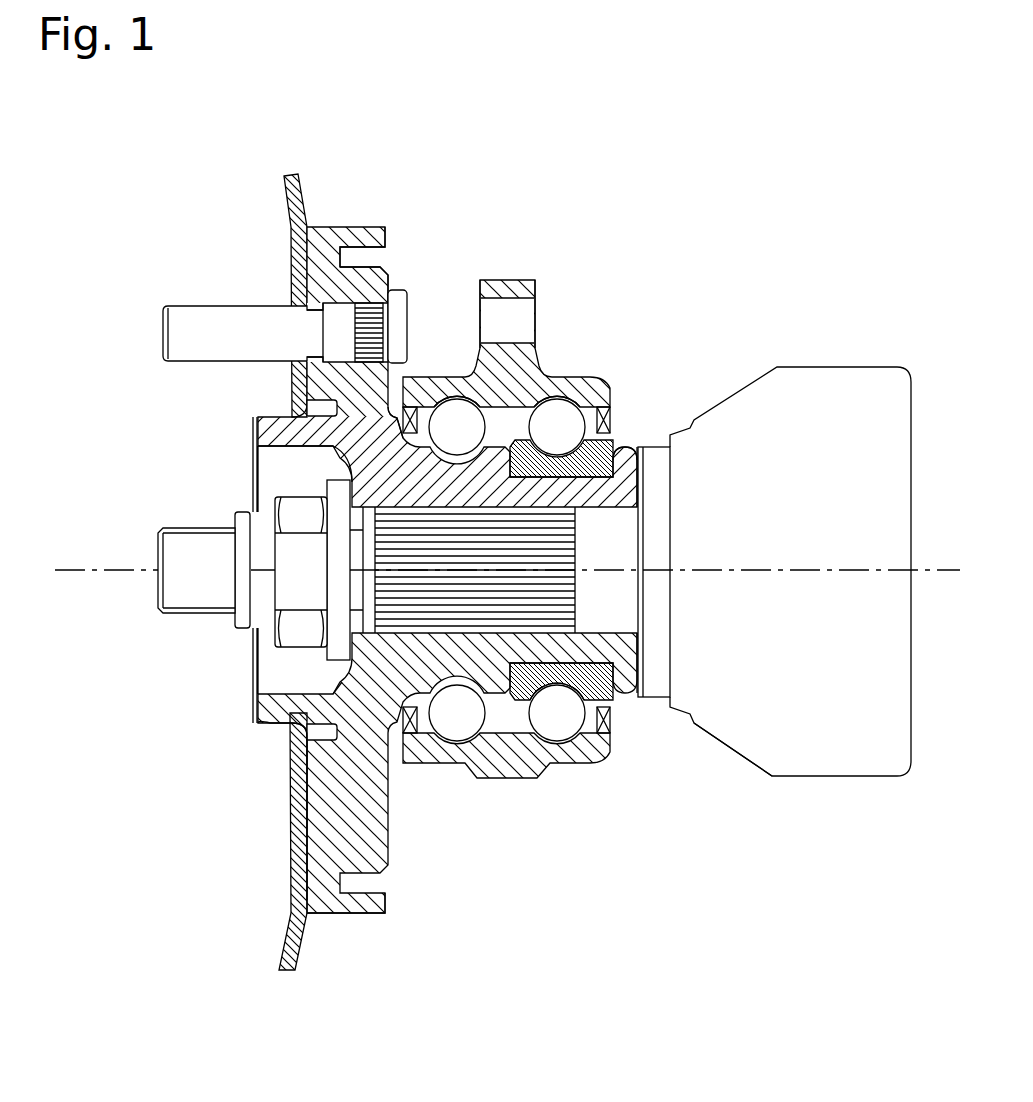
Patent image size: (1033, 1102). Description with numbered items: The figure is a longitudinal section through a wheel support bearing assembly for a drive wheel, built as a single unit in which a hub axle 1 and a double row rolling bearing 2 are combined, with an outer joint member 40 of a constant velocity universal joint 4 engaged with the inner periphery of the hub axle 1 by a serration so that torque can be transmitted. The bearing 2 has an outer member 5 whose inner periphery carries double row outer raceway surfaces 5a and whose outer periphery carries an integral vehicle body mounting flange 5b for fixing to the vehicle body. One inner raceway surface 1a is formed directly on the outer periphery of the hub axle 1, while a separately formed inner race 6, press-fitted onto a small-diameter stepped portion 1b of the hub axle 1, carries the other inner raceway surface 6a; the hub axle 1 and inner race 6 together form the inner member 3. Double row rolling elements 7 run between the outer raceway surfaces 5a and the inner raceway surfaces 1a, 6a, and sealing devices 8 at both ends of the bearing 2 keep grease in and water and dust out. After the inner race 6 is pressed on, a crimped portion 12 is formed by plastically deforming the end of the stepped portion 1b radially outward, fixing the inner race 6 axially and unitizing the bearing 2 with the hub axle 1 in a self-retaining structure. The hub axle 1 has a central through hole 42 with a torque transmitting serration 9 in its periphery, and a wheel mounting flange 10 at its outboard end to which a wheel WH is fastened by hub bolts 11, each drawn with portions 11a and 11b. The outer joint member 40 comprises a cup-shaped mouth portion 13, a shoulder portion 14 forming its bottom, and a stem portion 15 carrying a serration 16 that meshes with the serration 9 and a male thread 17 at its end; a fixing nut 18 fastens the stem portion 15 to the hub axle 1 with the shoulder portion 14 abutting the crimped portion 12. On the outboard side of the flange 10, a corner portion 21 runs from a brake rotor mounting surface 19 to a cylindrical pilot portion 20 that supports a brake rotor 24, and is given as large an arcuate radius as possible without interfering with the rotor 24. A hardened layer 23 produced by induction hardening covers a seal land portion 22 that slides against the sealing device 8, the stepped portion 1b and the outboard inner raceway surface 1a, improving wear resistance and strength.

The wheel WH is at (287, 184).
The hub axle 1 is at (431, 526).
The inner raceway surface 1a is at (345, 458).
The small-diameter stepped portion 1b is at (673, 482).
The double row rolling bearing 2 is at (398, 530).
The inner member 3 is at (431, 526).
The constant velocity universal joint 4 is at (774, 529).
The outer member 5 is at (506, 530).
The outer raceway surfaces 5a is at (564, 404).
The vehicle body mounting flange 5b is at (512, 280).
The inner race 6 is at (409, 669).
The inner raceway surface 6a is at (588, 720).
The rolling elements 7 is at (445, 428).
The sealing devices 8 is at (404, 748).
The torque transmitting serration 9 is at (287, 553).
The wheel mounting flange 10 is at (365, 273).
The hub bolts 11 is at (285, 298).
The shank of hub bolt 11a is at (320, 323).
The serrated portion of hub bolt 11b is at (367, 343).
The crimped portion 12 is at (627, 450).
The cup-shaped mouth portion 13 is at (846, 775).
The shoulder portion 14 is at (655, 457).
The stem portion 15 is at (602, 548).
The serration 16 is at (355, 588).
The male thread 17 is at (173, 601).
The fixing nut 18 is at (285, 556).
The brake rotor mounting surface 19 is at (303, 895).
The cylindrical pilot portion 20 is at (300, 724).
The corner portion 21 is at (307, 838).
The seal land portion 22 is at (403, 416).
The hardened layer 23 is at (630, 627).
The brake rotor 24 is at (354, 240).
The outer joint member 40 is at (774, 782).
The through hole 42 is at (355, 612).